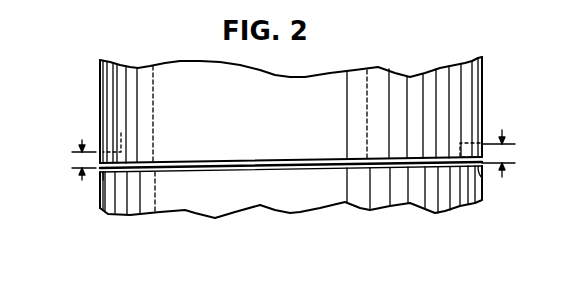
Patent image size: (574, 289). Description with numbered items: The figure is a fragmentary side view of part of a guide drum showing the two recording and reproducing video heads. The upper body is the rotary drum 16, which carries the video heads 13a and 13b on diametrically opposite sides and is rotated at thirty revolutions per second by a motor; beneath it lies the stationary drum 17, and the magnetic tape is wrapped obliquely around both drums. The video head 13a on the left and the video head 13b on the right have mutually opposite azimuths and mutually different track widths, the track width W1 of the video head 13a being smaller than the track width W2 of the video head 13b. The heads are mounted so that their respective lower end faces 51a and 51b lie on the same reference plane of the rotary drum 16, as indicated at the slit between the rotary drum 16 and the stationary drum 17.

The rotary drum 16 is at (482, 81).
The stationary drum 17 is at (418, 200).
The video head 13a is at (121, 138).
The video head 13b is at (478, 141).
The lower end face 51a is at (115, 170).
The lower end face 51b is at (472, 170).
The track width W1 is at (69, 160).
The track width W2 is at (511, 153).